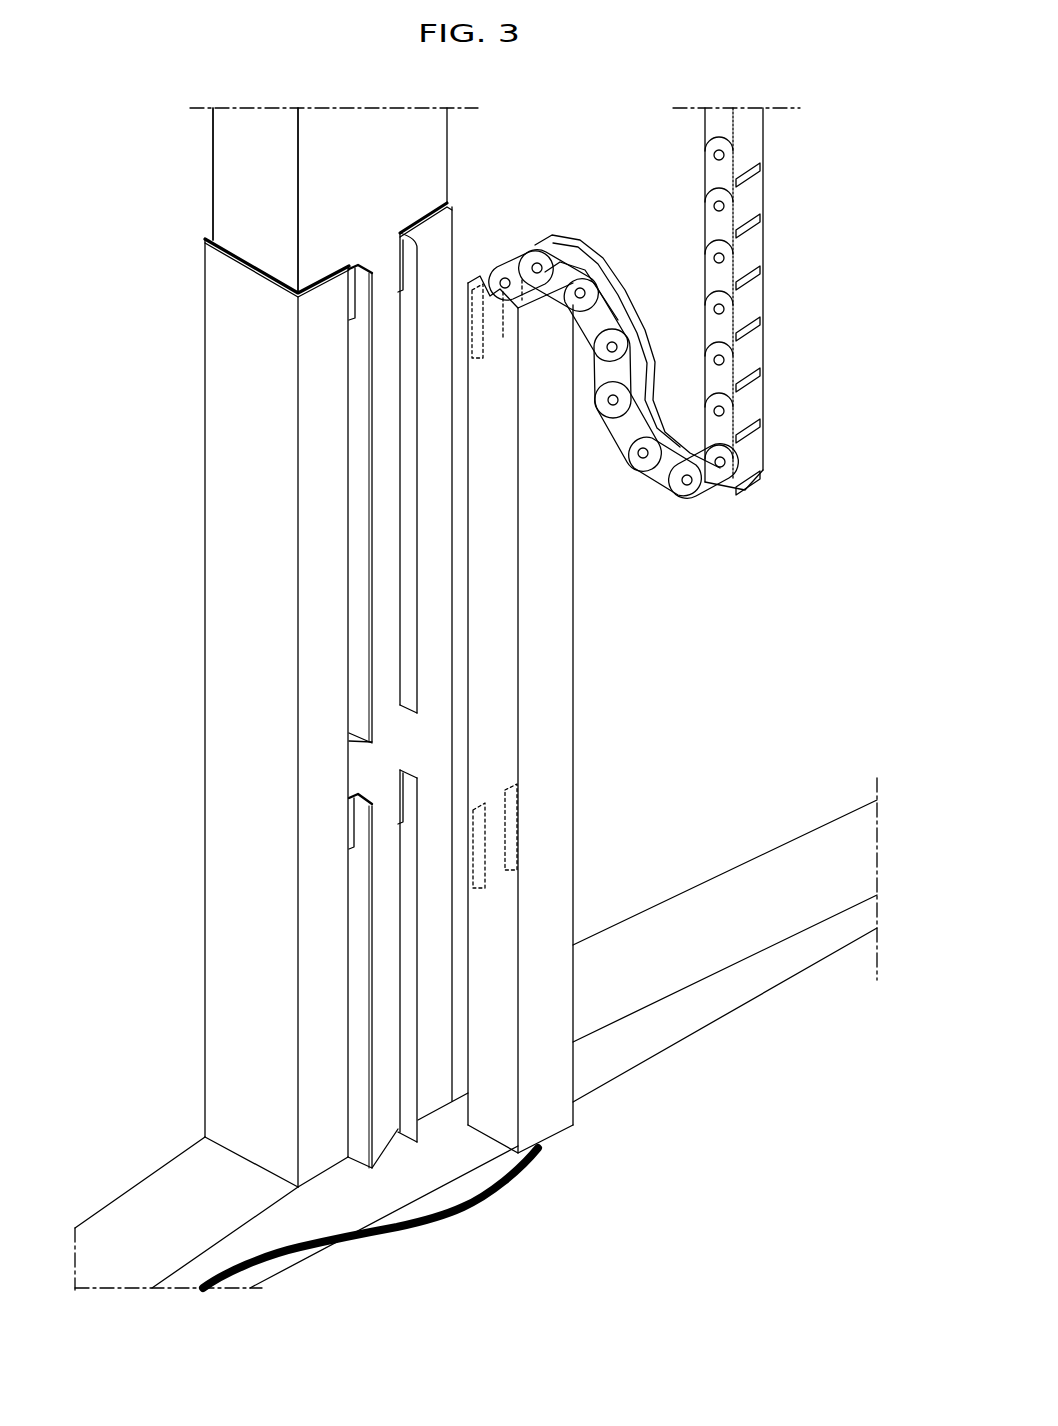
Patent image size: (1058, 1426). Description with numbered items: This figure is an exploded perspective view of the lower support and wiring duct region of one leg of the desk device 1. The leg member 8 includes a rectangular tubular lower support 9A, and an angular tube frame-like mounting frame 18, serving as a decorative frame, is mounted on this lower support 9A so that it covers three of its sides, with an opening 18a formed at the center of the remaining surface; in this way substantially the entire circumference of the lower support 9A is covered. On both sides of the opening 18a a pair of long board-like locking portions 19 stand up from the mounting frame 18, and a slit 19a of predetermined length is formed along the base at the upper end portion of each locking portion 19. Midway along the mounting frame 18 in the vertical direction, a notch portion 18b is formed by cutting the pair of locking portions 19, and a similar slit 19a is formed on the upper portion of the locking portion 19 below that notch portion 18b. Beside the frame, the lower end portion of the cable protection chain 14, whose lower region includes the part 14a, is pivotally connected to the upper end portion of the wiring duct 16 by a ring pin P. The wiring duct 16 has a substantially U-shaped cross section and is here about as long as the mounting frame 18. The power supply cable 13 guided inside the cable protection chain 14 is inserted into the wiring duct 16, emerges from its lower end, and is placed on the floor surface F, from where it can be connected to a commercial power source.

The desk device 1 is at (700, 645).
The leg member 8 is at (190, 101).
The lower support 9A is at (221, 158).
The power supply cable 13 is at (625, 332).
The cable protection chain 14 is at (766, 275).
The chain guide end portion 14a is at (760, 433).
The wiring duct 16 is at (573, 815).
The mounting frame 18 is at (206, 377).
The opening 18a is at (388, 263).
The notch portion 18b is at (350, 758).
The locking portion 19 is at (360, 428).
The slit 19a is at (401, 284).
The ring pin P is at (512, 281).
The floor surface F is at (750, 1130).